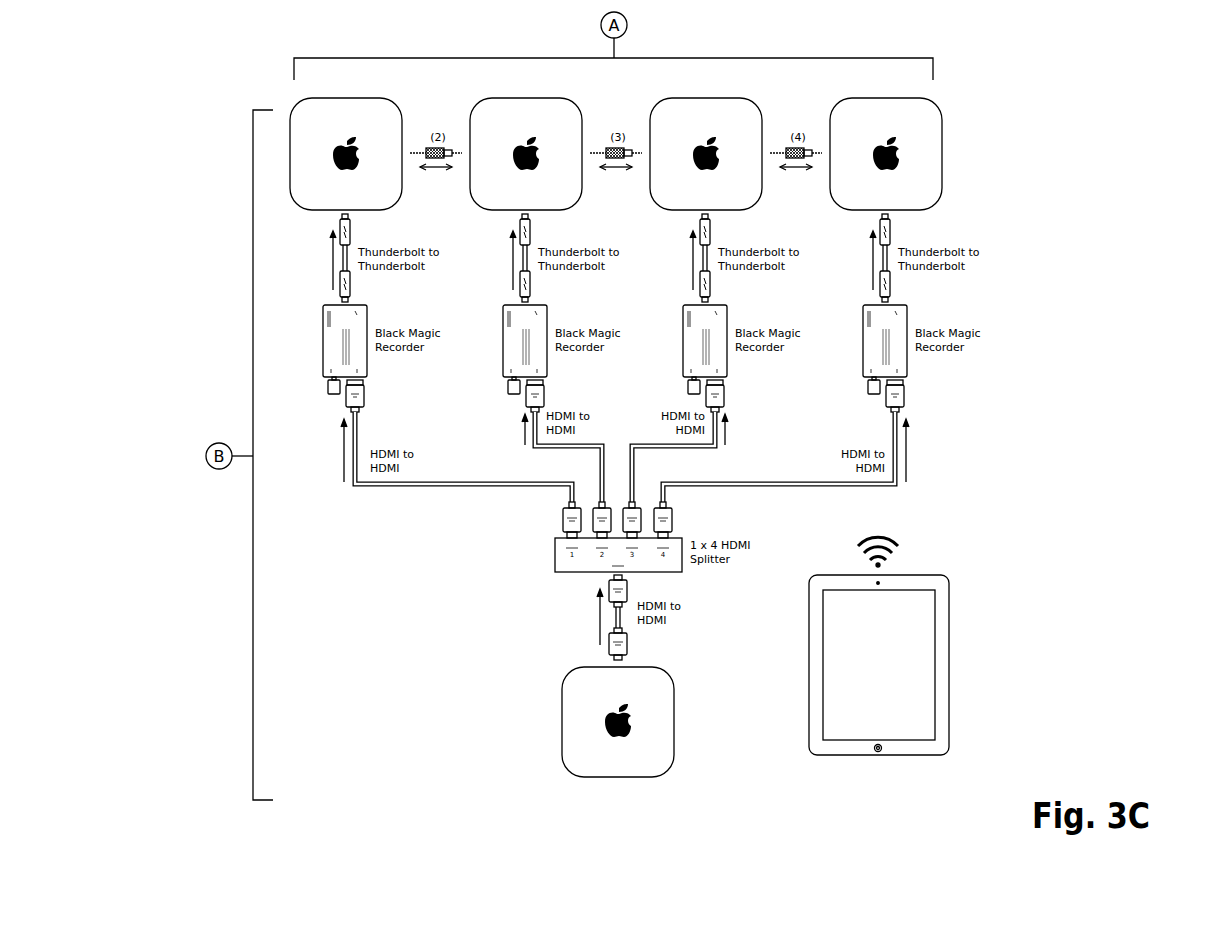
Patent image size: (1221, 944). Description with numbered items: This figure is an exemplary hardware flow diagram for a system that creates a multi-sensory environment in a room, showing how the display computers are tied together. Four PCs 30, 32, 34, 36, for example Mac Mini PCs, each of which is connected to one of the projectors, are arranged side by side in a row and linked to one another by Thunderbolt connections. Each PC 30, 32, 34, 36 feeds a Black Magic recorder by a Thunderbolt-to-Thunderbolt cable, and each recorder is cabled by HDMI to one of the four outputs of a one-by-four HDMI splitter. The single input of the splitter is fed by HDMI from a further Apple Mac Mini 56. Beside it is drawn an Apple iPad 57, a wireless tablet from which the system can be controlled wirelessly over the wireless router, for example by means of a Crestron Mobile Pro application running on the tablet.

The PC 30 is at (393, 208).
The PC 32 is at (573, 208).
The PC 34 is at (753, 208).
The PC 36 is at (933, 208).
The wireless tablet 56 is at (678, 775).
The Apple iPad tablet 57 is at (913, 569).